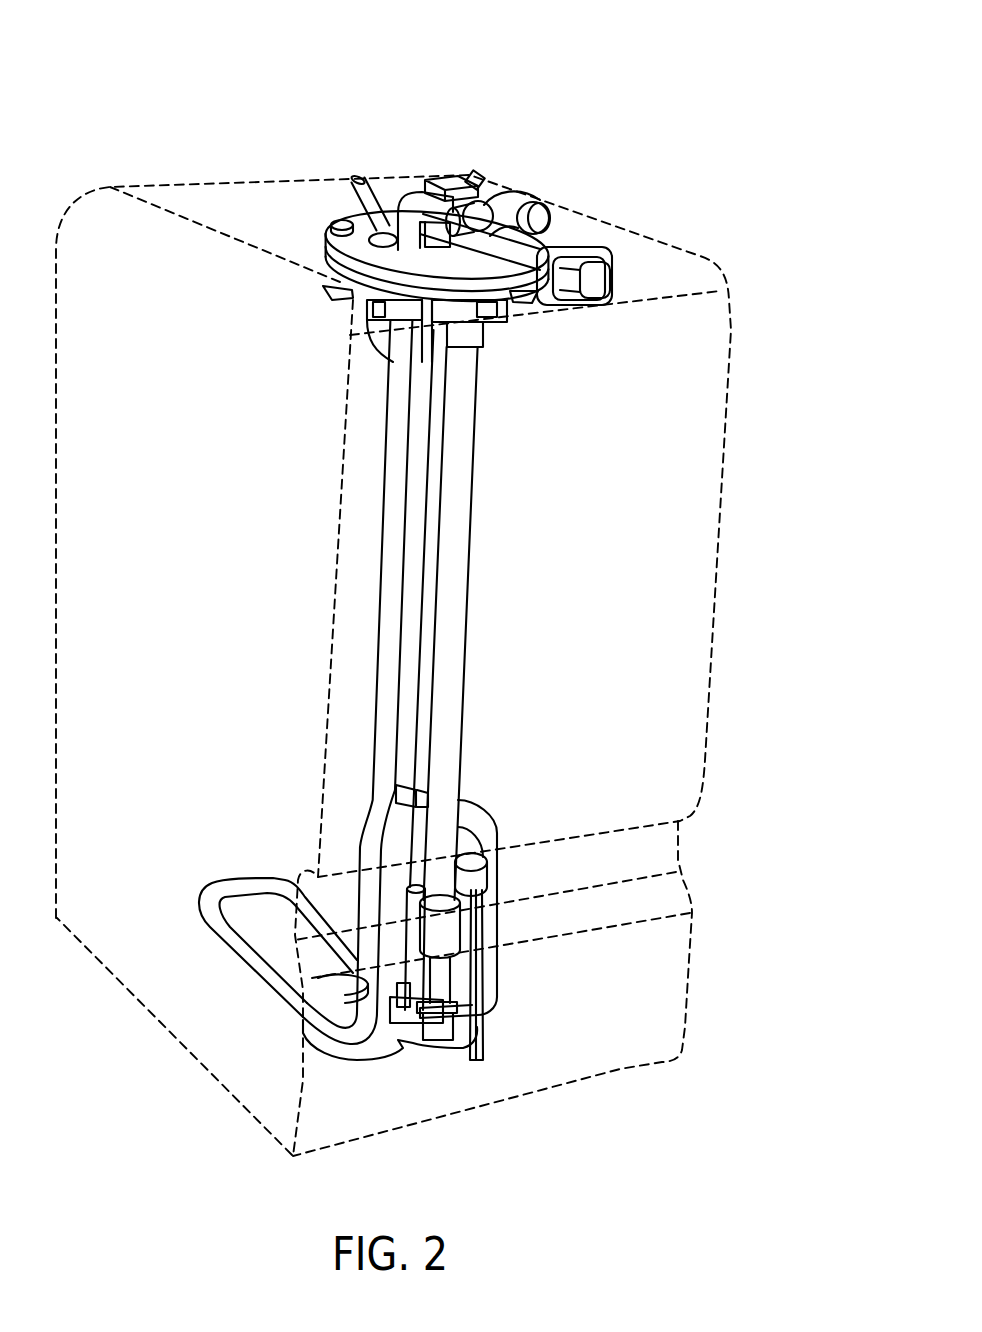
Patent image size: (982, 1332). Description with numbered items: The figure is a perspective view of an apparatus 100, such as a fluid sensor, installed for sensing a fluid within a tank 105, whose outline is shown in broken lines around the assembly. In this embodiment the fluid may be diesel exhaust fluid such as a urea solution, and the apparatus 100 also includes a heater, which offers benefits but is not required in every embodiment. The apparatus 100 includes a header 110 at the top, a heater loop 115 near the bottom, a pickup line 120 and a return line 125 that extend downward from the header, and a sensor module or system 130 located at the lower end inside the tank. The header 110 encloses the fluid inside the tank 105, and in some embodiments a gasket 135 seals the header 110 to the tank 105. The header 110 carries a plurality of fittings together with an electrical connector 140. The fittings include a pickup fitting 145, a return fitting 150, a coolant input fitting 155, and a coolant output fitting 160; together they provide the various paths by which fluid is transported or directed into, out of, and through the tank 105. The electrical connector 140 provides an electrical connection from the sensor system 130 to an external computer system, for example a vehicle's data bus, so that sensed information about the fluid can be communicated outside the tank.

The apparatus 100 is at (620, 72).
The tank 105 is at (150, 182).
The header 110 is at (323, 213).
The heater loop 115 is at (242, 887).
The pickup line 120 is at (428, 525).
The return line 125 is at (380, 345).
The sensor module or system 130 is at (524, 1018).
The gasket 135 is at (330, 273).
The electrical connector 140 is at (610, 273).
The pickup fitting 145 is at (472, 170).
The return fitting 150 is at (358, 177).
The coolant input fitting 155 is at (518, 197).
The coolant output fitting 160 is at (417, 196).